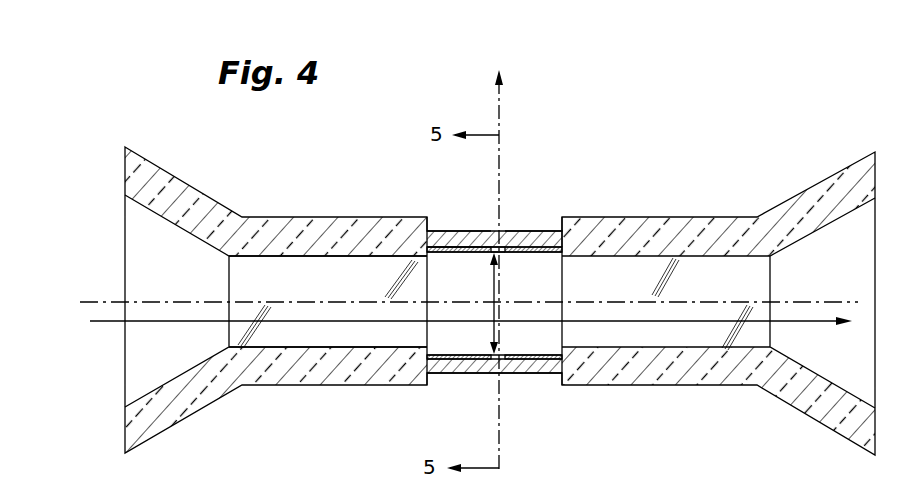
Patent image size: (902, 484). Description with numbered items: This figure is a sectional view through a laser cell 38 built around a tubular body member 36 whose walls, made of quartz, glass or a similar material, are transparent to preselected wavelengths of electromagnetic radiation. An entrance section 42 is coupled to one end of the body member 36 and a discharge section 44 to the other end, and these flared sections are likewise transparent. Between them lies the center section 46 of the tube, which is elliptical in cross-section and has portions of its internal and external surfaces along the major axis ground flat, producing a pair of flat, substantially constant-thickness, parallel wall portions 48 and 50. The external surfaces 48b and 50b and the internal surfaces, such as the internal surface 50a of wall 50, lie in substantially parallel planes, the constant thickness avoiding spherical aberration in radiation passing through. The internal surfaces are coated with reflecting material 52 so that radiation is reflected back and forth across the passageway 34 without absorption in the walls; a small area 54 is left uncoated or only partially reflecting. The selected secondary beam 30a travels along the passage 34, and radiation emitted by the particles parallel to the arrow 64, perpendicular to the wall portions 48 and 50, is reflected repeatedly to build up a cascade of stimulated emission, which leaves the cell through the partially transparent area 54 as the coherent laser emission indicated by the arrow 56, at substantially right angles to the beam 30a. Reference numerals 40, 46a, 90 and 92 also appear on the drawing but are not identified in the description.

The selected secondary beam 30a is at (100, 322).
The passageway 34 is at (248, 270).
The tubular body member 36 is at (311, 387).
The laser cell 38 is at (258, 387).
The tube wall 40 is at (306, 218).
The entrance section 42 is at (155, 167).
The discharge section 44 is at (823, 182).
The center section 46 is at (538, 231).
The sleeve inner surface 46a is at (447, 247).
The wall portion 48 is at (517, 231).
The external surface of wall portion 48 48b is at (481, 231).
The wall portion 50 is at (519, 375).
The internal surface of wall 50 50a is at (444, 372).
The external surface of wall portion 50 50b is at (474, 374).
The reflecting material 52 is at (519, 253).
The partially transparent area 54 is at (491, 258).
The arrow indicating laser emission 56 is at (500, 108).
The arrow indicating direction of emitted radiation 64 is at (500, 296).
The element 90 is at (727, 475).
The element 92 is at (790, 475).